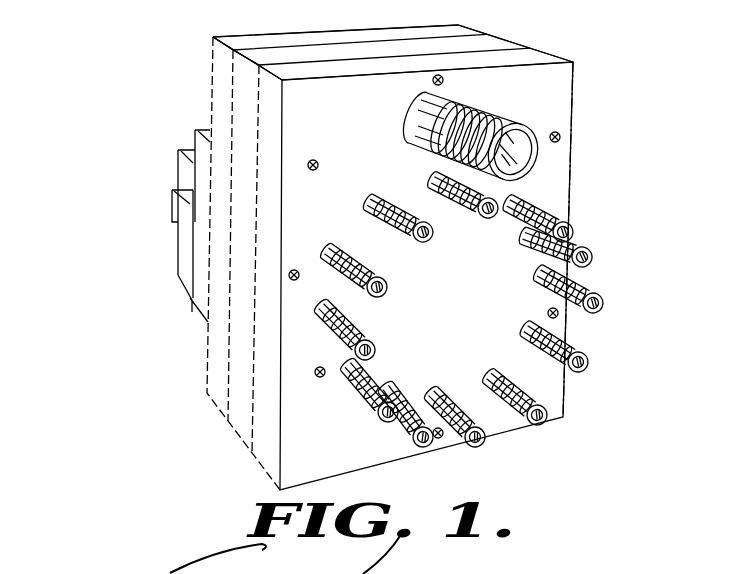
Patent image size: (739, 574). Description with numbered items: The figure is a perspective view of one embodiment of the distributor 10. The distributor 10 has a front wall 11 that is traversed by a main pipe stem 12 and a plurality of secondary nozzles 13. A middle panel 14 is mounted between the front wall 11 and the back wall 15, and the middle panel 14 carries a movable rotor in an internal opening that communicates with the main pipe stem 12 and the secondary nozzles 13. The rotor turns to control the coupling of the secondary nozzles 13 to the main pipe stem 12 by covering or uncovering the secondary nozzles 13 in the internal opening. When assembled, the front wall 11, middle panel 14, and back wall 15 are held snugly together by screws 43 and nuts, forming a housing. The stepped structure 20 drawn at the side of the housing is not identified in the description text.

The cable termination assembly 10 is at (125, 24).
The housing 11 is at (576, 92).
The cable entry bushing 12 is at (527, 163).
The connector plugs 13 is at (408, 238).
The top wall 14 is at (490, 43).
The corner edge 15 is at (248, 36).
The stepped mounting bracket 20 is at (180, 170).
The screws 43 is at (320, 163).